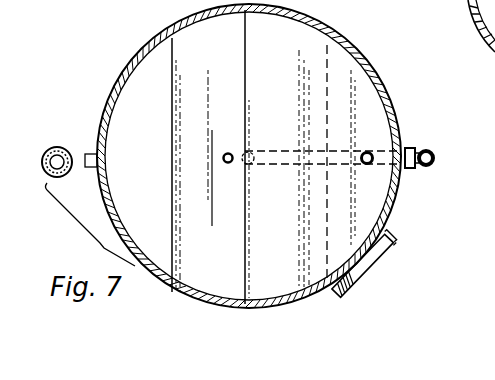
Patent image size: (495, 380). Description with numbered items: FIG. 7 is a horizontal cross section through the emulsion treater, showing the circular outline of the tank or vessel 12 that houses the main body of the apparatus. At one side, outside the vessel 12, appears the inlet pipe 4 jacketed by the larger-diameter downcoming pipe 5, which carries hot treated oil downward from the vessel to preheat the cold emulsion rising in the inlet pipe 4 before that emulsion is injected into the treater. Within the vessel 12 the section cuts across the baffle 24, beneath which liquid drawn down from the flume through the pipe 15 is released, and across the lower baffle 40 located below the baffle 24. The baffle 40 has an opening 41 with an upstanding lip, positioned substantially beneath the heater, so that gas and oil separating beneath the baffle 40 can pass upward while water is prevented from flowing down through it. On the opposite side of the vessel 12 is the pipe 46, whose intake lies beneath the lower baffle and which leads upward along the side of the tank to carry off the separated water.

The inlet pipe 4 is at (70, 153).
The downcoming pipe 5 is at (50, 148).
The tank or vessel 12 is at (362, 75).
The pipe 15 is at (375, 148).
The baffle 24 is at (310, 63).
The baffle 40 is at (229, 292).
The opening 41 is at (233, 153).
The pipe 46 is at (436, 158).